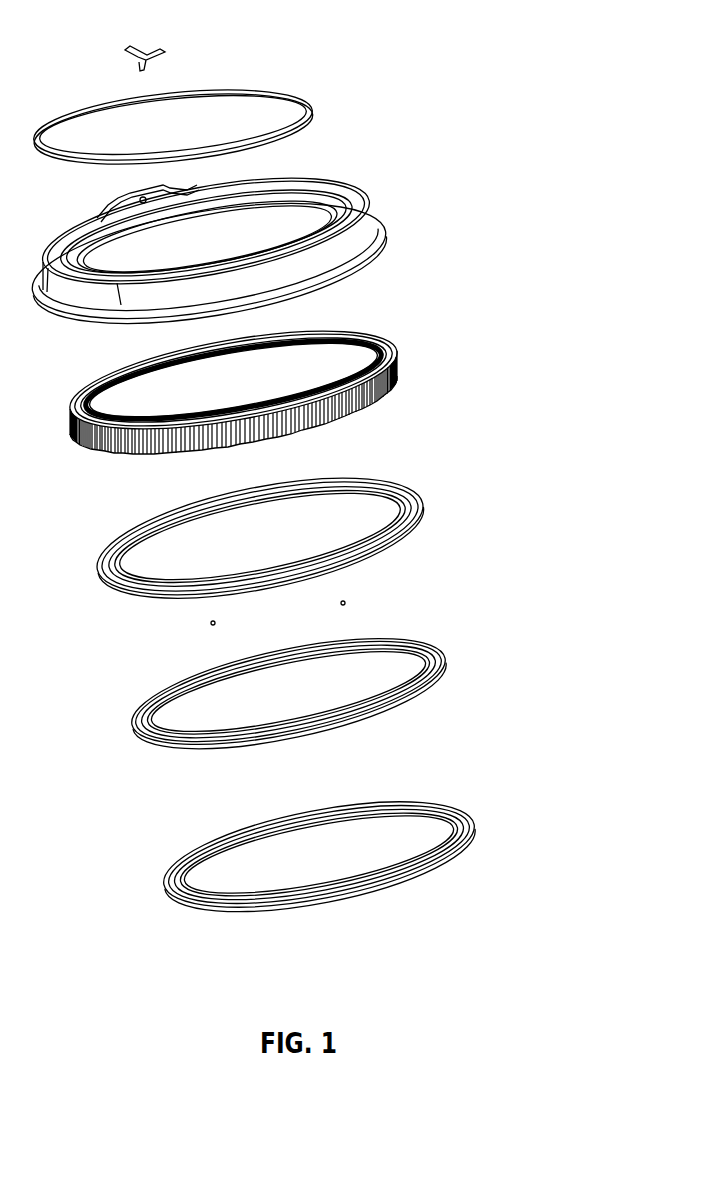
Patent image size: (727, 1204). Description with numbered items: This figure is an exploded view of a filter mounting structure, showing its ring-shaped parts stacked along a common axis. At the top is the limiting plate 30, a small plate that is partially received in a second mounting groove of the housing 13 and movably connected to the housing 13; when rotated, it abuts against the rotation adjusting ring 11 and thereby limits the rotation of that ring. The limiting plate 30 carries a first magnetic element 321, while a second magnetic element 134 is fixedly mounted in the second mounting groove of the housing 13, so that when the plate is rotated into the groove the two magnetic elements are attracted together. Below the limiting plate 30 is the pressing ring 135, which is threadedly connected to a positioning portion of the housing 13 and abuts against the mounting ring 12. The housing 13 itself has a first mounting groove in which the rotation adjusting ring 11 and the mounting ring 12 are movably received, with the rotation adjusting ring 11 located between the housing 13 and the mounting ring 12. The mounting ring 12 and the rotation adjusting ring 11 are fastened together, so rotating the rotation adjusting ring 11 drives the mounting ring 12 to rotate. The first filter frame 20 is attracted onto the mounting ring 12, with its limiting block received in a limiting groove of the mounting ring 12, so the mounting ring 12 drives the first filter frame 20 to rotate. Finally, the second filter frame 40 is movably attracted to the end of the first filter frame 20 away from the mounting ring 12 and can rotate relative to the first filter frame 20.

The limiting plate 30 is at (163, 55).
The pressing ring 135 is at (313, 105).
The housing 13 is at (340, 241).
The rotation adjusting ring 11 is at (397, 368).
The mounting ring 12 is at (420, 528).
The second magnetic element 134 is at (345, 603).
The first magnetic element 321 is at (211, 623).
The first filter frame 20 is at (433, 667).
The second filter frame 40 is at (472, 830).